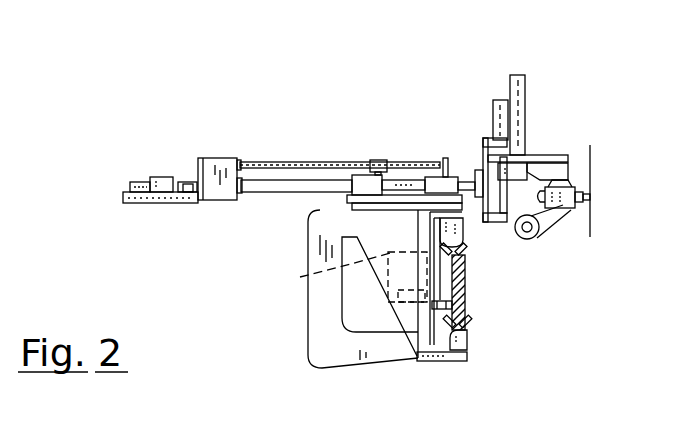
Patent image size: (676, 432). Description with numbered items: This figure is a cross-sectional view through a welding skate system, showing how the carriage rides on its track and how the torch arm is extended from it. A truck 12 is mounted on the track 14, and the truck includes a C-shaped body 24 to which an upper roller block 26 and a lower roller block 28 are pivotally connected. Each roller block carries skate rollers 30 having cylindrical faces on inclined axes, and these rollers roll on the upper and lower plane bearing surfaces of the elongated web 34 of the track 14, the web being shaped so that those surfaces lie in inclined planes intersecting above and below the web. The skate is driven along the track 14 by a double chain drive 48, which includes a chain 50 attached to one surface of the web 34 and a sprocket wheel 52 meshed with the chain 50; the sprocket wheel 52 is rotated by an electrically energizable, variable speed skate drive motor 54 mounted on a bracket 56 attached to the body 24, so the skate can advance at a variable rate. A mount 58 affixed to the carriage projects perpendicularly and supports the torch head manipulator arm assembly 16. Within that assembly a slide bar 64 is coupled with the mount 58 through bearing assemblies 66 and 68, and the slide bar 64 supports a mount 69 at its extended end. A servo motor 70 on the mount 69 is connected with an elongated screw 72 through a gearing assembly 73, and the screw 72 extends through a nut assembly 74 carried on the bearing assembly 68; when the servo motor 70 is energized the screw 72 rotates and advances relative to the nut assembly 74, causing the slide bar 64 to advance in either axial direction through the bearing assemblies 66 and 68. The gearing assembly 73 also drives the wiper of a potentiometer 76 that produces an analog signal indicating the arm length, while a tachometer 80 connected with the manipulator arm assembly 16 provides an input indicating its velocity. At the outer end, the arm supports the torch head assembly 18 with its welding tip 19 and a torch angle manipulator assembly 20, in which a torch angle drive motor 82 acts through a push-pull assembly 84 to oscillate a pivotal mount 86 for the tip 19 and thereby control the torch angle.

The truck 12 is at (441, 365).
The track 14 is at (470, 283).
The torch head manipulator arm assembly 16 is at (283, 200).
The torch head assembly 18 is at (579, 215).
The welding tip 19 is at (593, 196).
The torch angle manipulator assembly 20 is at (527, 107).
The C-shaped body 24 is at (427, 227).
The upper roller block 26 is at (465, 233).
The lower roller block 28 is at (468, 338).
The skate rollers 30 is at (470, 320).
The web 34 is at (464, 272).
The double chain drive 48 is at (447, 292).
The chain 50 is at (467, 304).
The sprocket wheel 52 is at (427, 320).
The skate drive motor 54 is at (310, 276).
The bracket 56 is at (436, 241).
The mount 58 is at (308, 298).
The slide bar 64 is at (258, 193).
The bearing assembly 66 is at (440, 182).
The bearing assembly 68 is at (360, 182).
The mount 69 is at (203, 170).
The servo motor 70 is at (158, 177).
The screw 72 is at (262, 163).
The gearing assembly 73 is at (182, 182).
The nut assembly 74 is at (380, 160).
The potentiometer 76 is at (190, 190).
The tachometer 80 is at (135, 180).
The torch angle drive motor 82 is at (528, 77).
The push-pull assembly 84 is at (540, 152).
The pivotal mount 86 is at (565, 192).